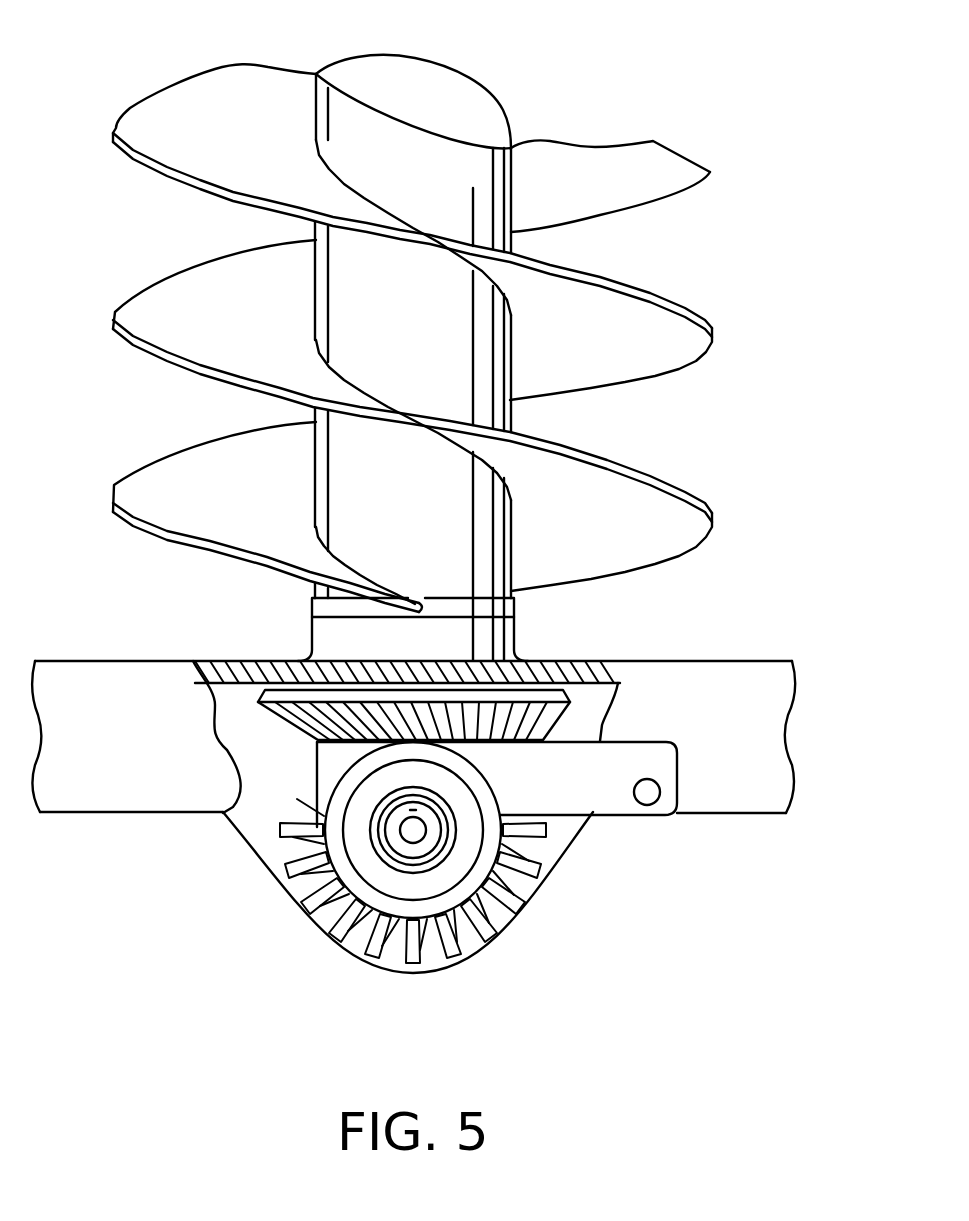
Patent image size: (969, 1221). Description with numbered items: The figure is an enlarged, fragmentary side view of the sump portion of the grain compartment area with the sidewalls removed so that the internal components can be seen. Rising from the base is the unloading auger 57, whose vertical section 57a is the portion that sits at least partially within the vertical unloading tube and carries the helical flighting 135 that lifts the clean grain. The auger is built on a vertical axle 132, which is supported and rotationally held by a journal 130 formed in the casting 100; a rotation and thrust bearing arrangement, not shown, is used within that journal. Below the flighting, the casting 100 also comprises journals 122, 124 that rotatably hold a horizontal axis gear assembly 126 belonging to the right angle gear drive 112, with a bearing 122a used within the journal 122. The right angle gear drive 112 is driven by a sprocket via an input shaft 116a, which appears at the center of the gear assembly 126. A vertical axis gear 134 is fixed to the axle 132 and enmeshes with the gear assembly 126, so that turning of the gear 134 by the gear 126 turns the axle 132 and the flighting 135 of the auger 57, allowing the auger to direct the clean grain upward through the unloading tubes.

The unloading auger 57 is at (150, 85).
The vertical section 57a is at (431, 332).
The vertical axle 132 is at (430, 95).
The flighting 135 is at (653, 141).
The journal 130 is at (517, 633).
The casting 100 is at (758, 818).
The vertical axis gear 134 is at (273, 716).
The right angle gear drive 112 is at (422, 860).
The journal 124 is at (270, 855).
The journal 122 is at (449, 861).
The bearing 122a is at (455, 845).
The horizontal axis gear assembly 126 is at (467, 955).
The input shaft 116a is at (412, 836).